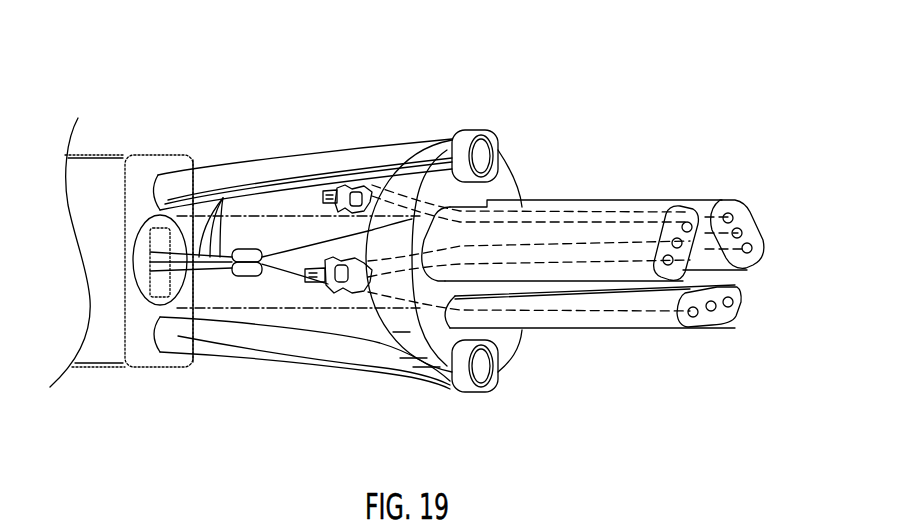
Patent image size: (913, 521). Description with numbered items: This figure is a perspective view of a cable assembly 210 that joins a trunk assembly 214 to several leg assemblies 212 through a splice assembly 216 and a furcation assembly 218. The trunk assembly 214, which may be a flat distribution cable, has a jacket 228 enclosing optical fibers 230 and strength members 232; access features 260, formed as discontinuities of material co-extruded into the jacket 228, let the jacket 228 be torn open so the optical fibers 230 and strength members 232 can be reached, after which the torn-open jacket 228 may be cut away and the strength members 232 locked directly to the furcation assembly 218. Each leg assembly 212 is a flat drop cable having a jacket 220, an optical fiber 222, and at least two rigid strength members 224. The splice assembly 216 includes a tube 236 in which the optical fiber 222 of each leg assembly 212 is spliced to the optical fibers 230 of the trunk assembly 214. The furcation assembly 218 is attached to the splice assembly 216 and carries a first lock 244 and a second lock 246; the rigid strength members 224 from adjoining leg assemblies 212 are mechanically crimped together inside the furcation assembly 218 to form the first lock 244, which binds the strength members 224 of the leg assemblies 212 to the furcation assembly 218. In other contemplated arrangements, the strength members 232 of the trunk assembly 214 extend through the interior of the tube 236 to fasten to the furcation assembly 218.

The cable assembly 210 is at (634, 109).
The leg assembly 212 is at (647, 230).
The trunk assembly 214 is at (105, 170).
The splice assembly 216 is at (231, 305).
The furcation assembly 218 is at (413, 168).
The jacket 220 is at (714, 317).
The optical fiber 222 is at (309, 255).
The strength members 224 is at (318, 185).
The jacket 228 is at (129, 320).
The optical fibers 230 is at (223, 198).
The strength members 232 is at (267, 172).
The tube 236 is at (247, 323).
The first lock 244 is at (353, 184).
The second lock 246 is at (468, 120).
The access features 260 is at (164, 173).